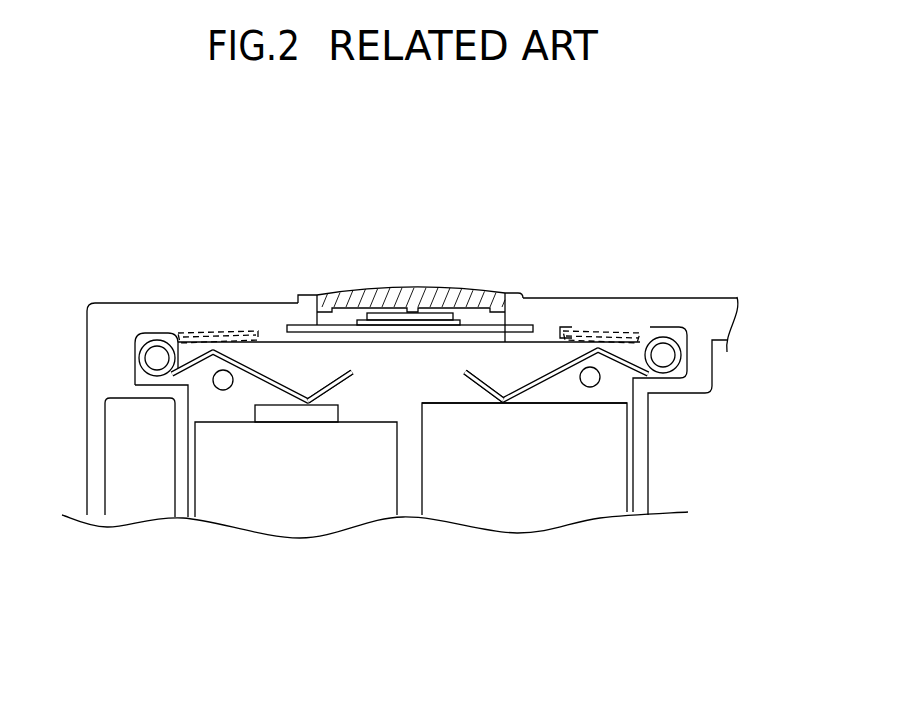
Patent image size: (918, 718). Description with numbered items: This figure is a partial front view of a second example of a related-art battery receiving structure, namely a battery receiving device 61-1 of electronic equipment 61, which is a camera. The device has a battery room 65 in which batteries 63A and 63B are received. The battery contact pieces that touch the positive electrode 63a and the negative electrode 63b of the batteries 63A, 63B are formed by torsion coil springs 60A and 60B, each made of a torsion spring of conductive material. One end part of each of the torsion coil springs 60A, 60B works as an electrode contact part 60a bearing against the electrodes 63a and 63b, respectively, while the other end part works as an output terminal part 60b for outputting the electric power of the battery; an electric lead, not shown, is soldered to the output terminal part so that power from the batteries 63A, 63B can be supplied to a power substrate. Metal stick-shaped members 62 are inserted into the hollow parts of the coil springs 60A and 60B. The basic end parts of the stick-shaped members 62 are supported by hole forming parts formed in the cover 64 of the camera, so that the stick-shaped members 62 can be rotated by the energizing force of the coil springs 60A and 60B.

The electronic equipment 61 is at (240, 203).
The battery receiving device 61-1 is at (418, 232).
The output terminal parts 60b is at (207, 333).
The electrode contact parts 60a is at (313, 397).
The torsion coil spring 60A is at (273, 388).
The torsion coil spring 60B is at (550, 382).
The stick-shaped members 62 is at (153, 360).
The battery 63A is at (235, 515).
The positive electrode 63a is at (310, 417).
The battery 63B is at (528, 512).
The negative electrode 63b is at (527, 403).
The cover 64 is at (677, 307).
The battery room 65 is at (395, 538).